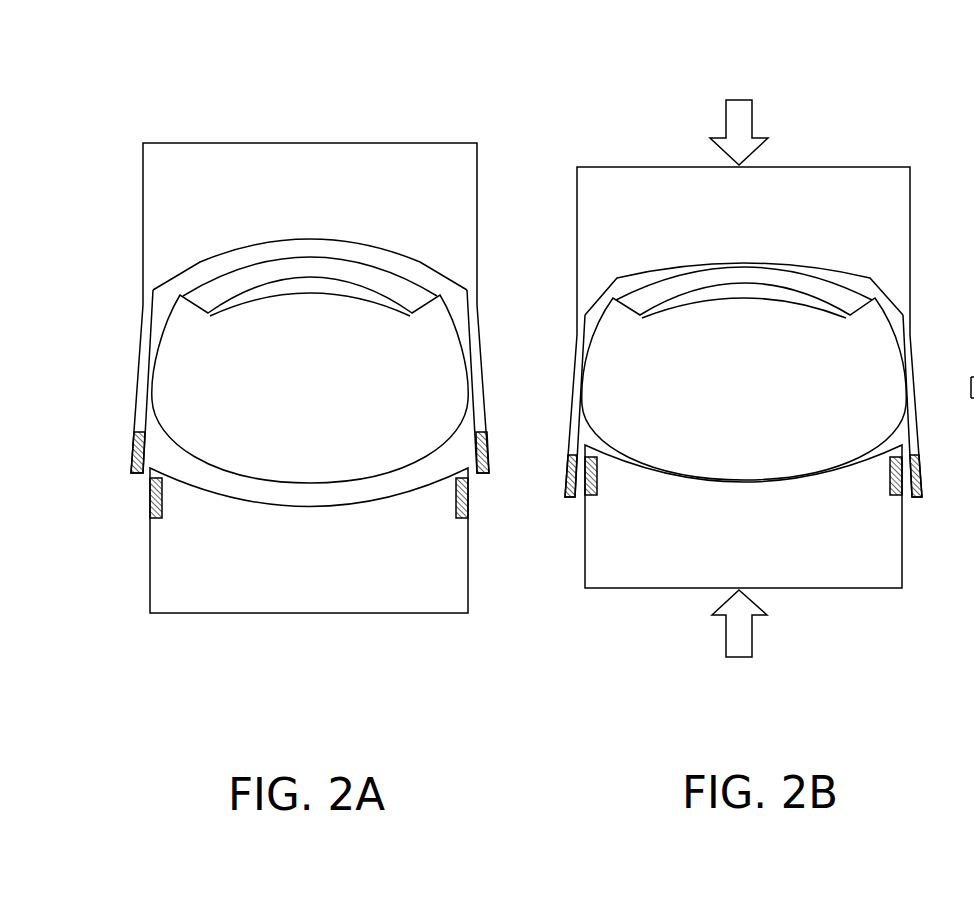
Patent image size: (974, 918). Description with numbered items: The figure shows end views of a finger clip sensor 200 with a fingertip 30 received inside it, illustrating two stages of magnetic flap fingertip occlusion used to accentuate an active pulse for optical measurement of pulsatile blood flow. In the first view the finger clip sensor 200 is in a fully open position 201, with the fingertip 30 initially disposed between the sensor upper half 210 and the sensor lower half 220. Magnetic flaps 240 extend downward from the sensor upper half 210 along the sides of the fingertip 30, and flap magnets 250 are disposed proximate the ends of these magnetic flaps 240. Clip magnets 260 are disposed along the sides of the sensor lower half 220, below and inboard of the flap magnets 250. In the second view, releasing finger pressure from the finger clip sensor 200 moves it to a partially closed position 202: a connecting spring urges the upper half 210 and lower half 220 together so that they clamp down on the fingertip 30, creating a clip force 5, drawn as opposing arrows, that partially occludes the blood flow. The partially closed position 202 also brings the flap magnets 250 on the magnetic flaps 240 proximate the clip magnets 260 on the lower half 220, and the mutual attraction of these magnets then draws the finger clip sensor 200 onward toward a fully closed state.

In FIG. 2A, the fully open position 201 is at (382, 66).
In FIG. 2B, the partially closed position 202 is at (800, 66).
In FIG. 2A, the finger clip sensor 200 is at (178, 142).
In FIG. 2B, the finger clip sensor 200 is at (617, 165).
In FIG. 2A, the sensor upper half 210 is at (407, 152).
In FIG. 2B, the sensor upper half 210 is at (845, 163).
In FIG. 2A, the sensor lower half 220 is at (387, 603).
In FIG. 2B, the sensor lower half 220 is at (825, 590).
In FIG. 2A, the magnetic flaps 240 is at (142, 368).
In FIG. 2B, the magnetic flaps 240 is at (743, 406).
In FIG. 2A, the flap magnets 250 is at (130, 453).
In FIG. 2B, the flap magnets 250 is at (563, 467).
In FIG. 2A, the clip magnets 260 is at (150, 497).
In FIG. 2B, the clip magnets 260 is at (597, 482).
In FIG. 2A, the fingertip 30 is at (387, 280).
In FIG. 2B, the fingertip 30 is at (823, 287).
In FIG. 2B, the clip force 5 is at (740, 126).